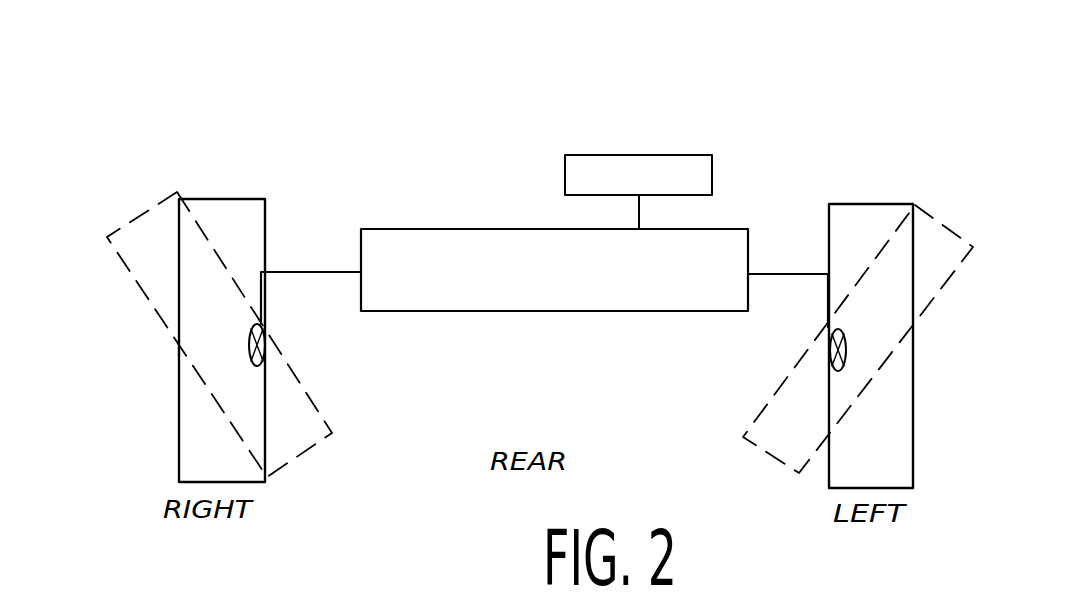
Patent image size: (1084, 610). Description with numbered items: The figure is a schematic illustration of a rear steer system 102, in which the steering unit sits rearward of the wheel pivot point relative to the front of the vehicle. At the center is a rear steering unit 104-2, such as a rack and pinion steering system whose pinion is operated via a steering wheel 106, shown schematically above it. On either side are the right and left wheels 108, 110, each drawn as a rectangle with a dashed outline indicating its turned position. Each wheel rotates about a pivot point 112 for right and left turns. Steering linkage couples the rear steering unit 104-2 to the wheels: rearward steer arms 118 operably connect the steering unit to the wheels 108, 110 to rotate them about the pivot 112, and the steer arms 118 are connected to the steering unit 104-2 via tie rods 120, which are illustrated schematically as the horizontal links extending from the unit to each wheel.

The rear steer system 102 is at (637, 107).
The rear steering unit 104-2 is at (496, 221).
The steering wheel 106 is at (670, 148).
The wheel 108 is at (230, 193).
The wheel 110 is at (848, 197).
The pivot point 112 is at (249, 348).
The rearward steer arms 118 is at (252, 300).
The tie rods 120 is at (311, 266).